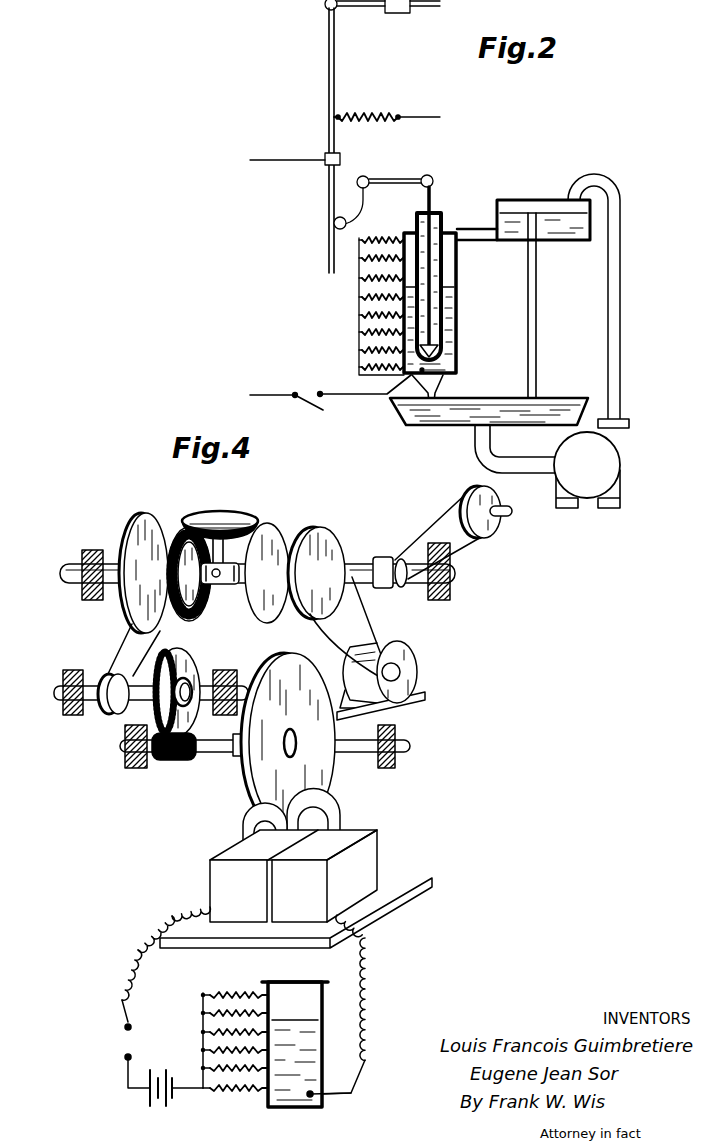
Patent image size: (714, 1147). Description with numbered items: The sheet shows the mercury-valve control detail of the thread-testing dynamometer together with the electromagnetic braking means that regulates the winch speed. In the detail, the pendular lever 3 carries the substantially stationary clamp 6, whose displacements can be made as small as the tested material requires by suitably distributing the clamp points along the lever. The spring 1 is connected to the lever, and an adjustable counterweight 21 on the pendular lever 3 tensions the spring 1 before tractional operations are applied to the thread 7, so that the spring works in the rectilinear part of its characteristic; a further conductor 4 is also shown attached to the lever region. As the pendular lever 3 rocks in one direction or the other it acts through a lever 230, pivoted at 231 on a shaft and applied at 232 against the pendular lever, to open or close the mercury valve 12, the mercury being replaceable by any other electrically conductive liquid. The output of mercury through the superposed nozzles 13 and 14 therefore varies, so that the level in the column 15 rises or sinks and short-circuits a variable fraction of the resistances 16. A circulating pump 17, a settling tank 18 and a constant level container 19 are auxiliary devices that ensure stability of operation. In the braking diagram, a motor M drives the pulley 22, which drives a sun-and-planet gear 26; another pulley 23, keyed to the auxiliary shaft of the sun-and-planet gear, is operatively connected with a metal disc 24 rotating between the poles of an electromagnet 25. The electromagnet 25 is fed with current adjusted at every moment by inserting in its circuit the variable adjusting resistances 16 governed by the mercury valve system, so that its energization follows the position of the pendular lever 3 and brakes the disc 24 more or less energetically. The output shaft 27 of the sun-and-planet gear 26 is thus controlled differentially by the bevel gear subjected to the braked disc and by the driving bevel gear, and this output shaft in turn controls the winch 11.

In FIG. 2, the spring 1 is at (372, 112).
In FIG. 2, the pendular lever 3 is at (328, 58).
In FIG. 2, the conductor 4 is at (440, 117).
In FIG. 2, the substantially stationary clamp 6 is at (342, 158).
In FIG. 2, the thread 7 is at (262, 163).
In FIG. 2, the adjustable counterweight 21 is at (400, 13).
In FIG. 2, the lever 230 is at (410, 184).
In FIG. 2, the pivot 231 is at (366, 177).
In FIG. 2, the point of application 232 is at (334, 228).
In FIG. 2, the constant level container 19 is at (557, 200).
In FIG. 2, the resistances 16 is at (368, 297).
In FIG. 4, the resistances 16 is at (213, 1018).
In FIG. 2, the column 15 is at (457, 290).
In FIG. 2, the mercury valve 12 is at (429, 329).
In FIG. 2, the nozzle 13 is at (458, 354).
In FIG. 2, the nozzle 14 is at (447, 387).
In FIG. 2, the settling tank 18 is at (442, 426).
In FIG. 2, the circulating pump 17 is at (618, 459).
In FIG. 4, the pulley 23 is at (130, 520).
In FIG. 4, the sun-and-planet gear 26 is at (217, 512).
In FIG. 4, the pulley 22 is at (306, 530).
In FIG. 4, the output shaft 27 is at (352, 568).
In FIG. 4, the winch 11 is at (500, 530).
In FIG. 4, the motor M is at (413, 677).
In FIG. 4, the metal disc 24 is at (312, 694).
In FIG. 4, the electromagnet 25 is at (363, 853).